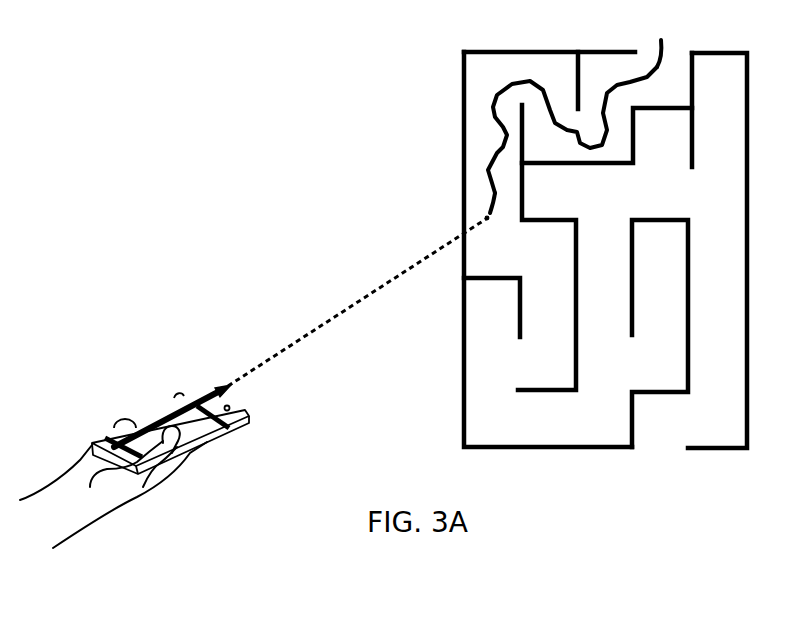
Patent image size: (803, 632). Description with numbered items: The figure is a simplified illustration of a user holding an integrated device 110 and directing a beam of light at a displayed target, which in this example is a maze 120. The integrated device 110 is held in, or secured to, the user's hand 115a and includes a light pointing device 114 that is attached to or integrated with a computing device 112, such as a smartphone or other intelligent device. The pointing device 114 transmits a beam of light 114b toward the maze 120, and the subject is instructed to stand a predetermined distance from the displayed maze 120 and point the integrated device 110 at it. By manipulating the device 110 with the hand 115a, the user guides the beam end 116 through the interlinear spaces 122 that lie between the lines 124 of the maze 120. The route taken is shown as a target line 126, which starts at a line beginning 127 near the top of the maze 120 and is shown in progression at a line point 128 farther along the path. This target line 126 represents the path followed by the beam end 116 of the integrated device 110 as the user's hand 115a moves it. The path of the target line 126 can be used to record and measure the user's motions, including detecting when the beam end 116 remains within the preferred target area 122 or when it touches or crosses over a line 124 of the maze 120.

The integrated device 110 is at (127, 372).
The computing device 112 is at (245, 427).
The light pointing device 114 is at (115, 428).
The beam of light 114b is at (303, 333).
The user's hand 115a is at (123, 505).
The beam end 116 is at (487, 218).
The maze 120 is at (549, 456).
The interlinear spaces 122 is at (582, 193).
The lines 124 is at (464, 80).
The target line 126 is at (668, 40).
The line beginning 127 is at (660, 41).
The line point 128 is at (490, 214).